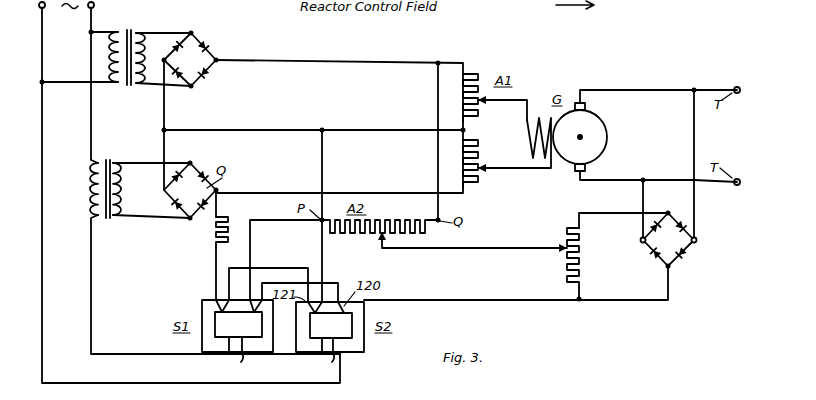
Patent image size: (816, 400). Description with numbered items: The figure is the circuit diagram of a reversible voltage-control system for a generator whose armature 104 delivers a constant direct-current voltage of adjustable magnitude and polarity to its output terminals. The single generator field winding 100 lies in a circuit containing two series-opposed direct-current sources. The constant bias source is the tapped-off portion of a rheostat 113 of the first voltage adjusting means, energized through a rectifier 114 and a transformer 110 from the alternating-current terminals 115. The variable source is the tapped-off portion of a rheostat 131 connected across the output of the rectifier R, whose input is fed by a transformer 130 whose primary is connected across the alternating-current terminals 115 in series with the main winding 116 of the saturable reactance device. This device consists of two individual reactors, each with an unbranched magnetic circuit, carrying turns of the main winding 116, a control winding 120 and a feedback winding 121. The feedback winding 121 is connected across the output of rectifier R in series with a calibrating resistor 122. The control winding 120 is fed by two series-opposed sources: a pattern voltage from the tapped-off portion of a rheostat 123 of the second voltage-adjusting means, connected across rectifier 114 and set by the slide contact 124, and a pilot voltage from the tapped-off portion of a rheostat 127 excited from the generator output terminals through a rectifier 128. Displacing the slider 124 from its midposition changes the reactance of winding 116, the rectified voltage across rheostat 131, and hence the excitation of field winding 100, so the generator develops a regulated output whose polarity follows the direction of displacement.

The generator field winding 100 is at (527, 140).
The generator armature 104 is at (603, 131).
The transformer 110 is at (128, 30).
The rheostat 113 is at (465, 99).
The rectifier 114 is at (201, 56).
The alternating-current terminals 115 is at (87, 24).
The main winding 116 is at (271, 366).
The control winding 120 is at (238, 333).
The feedback winding 121 is at (212, 300).
The calibrating resistor 122 is at (228, 221).
The rheostat 123 is at (395, 220).
The slide contact 124 is at (376, 244).
The rheostat 127 is at (583, 272).
The rectifier 128 is at (668, 225).
The transformer 130 is at (108, 161).
The rheostat 131 is at (482, 158).